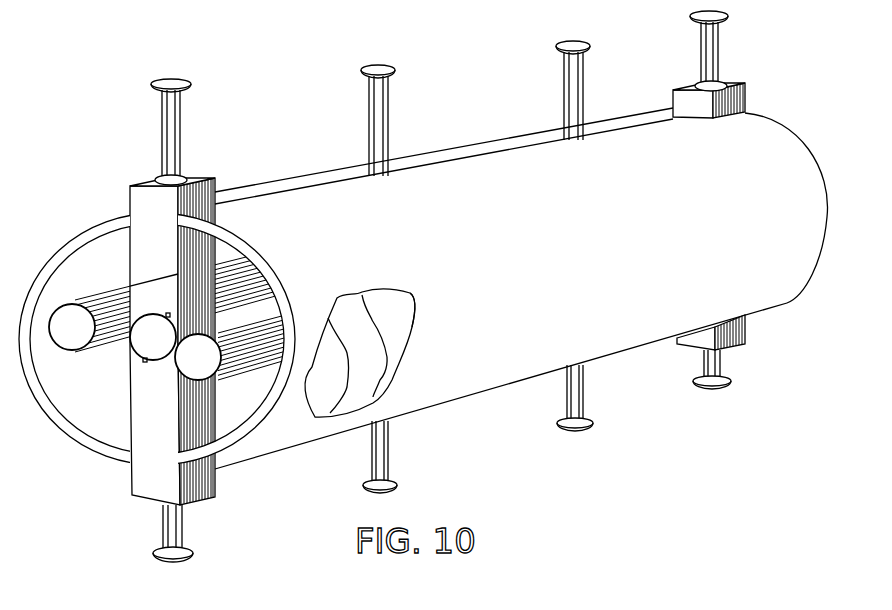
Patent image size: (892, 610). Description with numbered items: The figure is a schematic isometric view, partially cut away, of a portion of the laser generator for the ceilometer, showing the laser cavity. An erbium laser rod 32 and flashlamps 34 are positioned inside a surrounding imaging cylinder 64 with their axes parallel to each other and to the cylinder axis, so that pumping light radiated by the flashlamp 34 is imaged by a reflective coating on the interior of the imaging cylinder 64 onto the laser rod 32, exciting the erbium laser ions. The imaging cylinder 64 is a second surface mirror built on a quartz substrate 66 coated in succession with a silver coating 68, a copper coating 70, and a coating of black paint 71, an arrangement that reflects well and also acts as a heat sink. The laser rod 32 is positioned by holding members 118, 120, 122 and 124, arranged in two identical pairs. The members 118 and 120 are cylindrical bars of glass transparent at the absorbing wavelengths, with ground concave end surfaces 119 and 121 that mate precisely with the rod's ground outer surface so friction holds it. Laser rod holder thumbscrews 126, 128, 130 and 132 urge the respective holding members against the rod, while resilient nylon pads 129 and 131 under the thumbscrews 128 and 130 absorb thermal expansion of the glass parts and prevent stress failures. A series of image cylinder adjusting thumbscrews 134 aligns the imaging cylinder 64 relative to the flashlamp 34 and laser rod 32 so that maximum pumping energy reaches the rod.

The erbium laser rod 32 is at (167, 346).
The flashlamp 34 is at (86, 338).
The imaging cylinder 64 is at (66, 221).
The quartz substrate 66 is at (325, 330).
The silver coating 68 is at (355, 318).
The copper coating 70 is at (392, 307).
The coating of black paint 71 is at (423, 307).
The holding member 118 is at (164, 247).
The concave end surface 119 is at (168, 312).
The holding member 120 is at (171, 441).
The concave end surface 121 is at (147, 362).
The holding member 122 is at (730, 336).
The holding member 124 is at (746, 93).
The laser rod holder thumbscrew 126 is at (171, 131).
The laser rod holder thumbscrew 128 is at (173, 533).
The pad 129 is at (183, 178).
The laser rod holder thumbscrew 130 is at (721, 371).
The pad 131 is at (697, 83).
The laser rod holder thumbscrew 132 is at (685, 47).
The image cylinder adjusting thumbscrew 134 is at (567, 68).